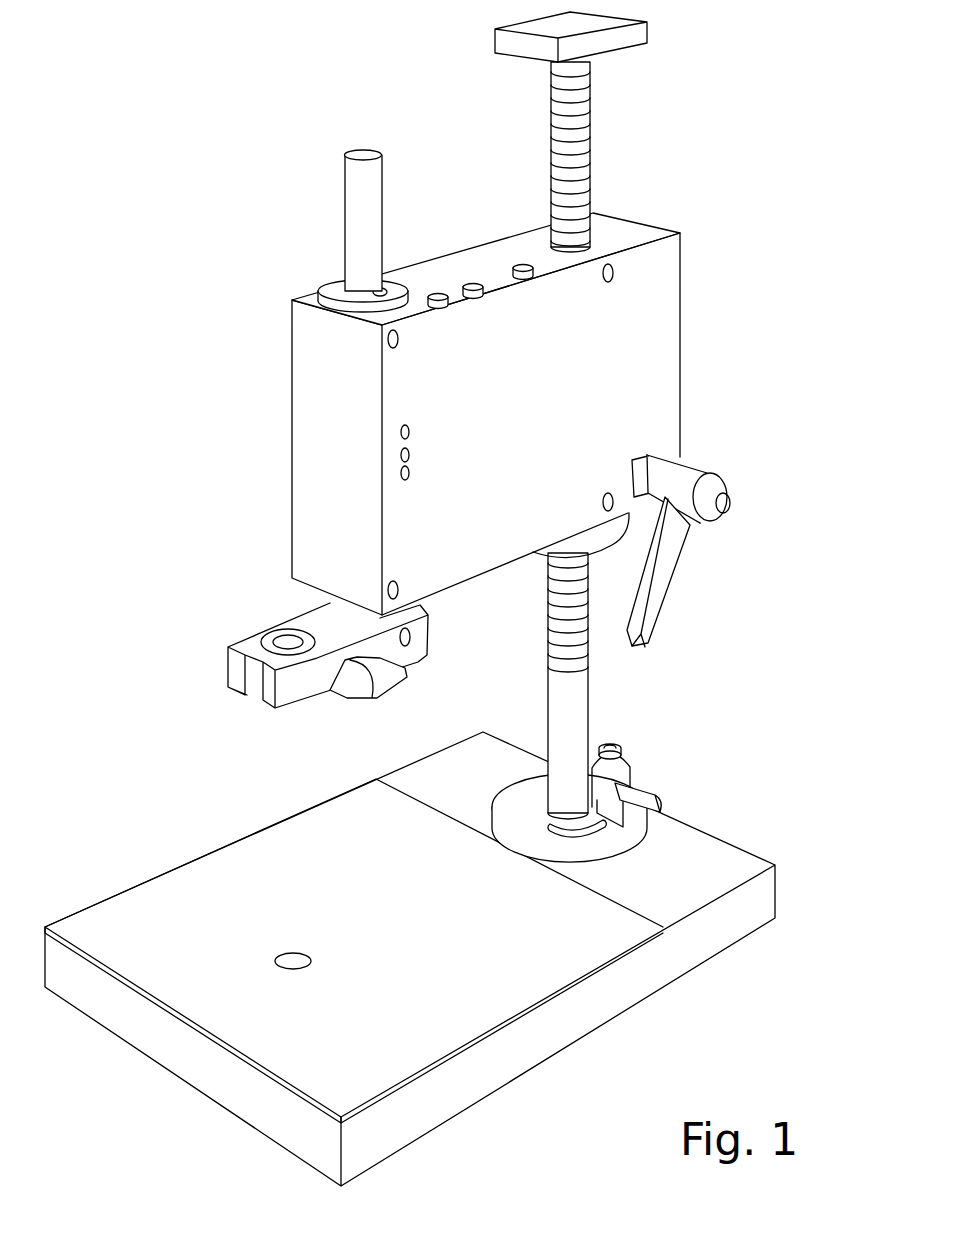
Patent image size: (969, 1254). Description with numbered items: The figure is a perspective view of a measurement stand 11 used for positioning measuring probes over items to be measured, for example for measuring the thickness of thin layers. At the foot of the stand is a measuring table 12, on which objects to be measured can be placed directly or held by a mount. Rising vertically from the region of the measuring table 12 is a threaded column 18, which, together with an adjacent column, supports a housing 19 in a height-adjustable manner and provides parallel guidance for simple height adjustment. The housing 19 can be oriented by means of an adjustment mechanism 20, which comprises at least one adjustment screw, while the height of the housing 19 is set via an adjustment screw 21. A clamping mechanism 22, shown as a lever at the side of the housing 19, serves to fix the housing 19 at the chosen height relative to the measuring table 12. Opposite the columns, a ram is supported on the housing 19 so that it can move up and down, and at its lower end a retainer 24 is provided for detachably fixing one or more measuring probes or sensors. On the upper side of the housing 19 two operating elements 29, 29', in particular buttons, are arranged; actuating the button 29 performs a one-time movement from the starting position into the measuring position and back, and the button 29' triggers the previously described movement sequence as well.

The measurement stand 11 is at (453, 599).
The measuring table 12 is at (432, 1033).
The threaded column 18 is at (573, 710).
The housing 19 is at (547, 313).
The adjustment mechanism 20 is at (568, 687).
The adjustment screw 21 is at (612, 535).
The clamping mechanism 22 is at (692, 579).
The retainer 24 is at (198, 703).
The operating element 29 is at (422, 232).
The operating element 29' is at (486, 218).